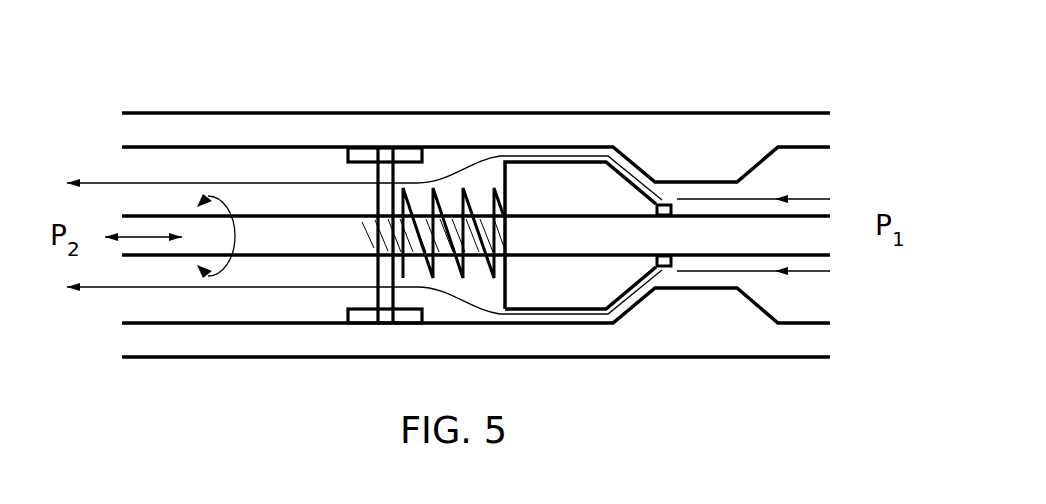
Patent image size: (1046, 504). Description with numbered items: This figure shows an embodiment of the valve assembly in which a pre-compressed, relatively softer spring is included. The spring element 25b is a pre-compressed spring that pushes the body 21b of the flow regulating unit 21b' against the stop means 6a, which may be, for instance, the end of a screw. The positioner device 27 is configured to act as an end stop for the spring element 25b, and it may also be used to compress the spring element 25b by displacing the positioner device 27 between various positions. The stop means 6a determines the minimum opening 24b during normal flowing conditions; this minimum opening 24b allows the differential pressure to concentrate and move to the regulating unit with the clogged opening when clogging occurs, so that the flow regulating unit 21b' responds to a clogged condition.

The flow regulating unit 21b' is at (476, 183).
The positioner device 27 is at (364, 155).
The spring element 25b is at (465, 190).
The body 21b is at (580, 181).
The minimum opening 24b is at (627, 155).
The stop means 6a is at (669, 203).